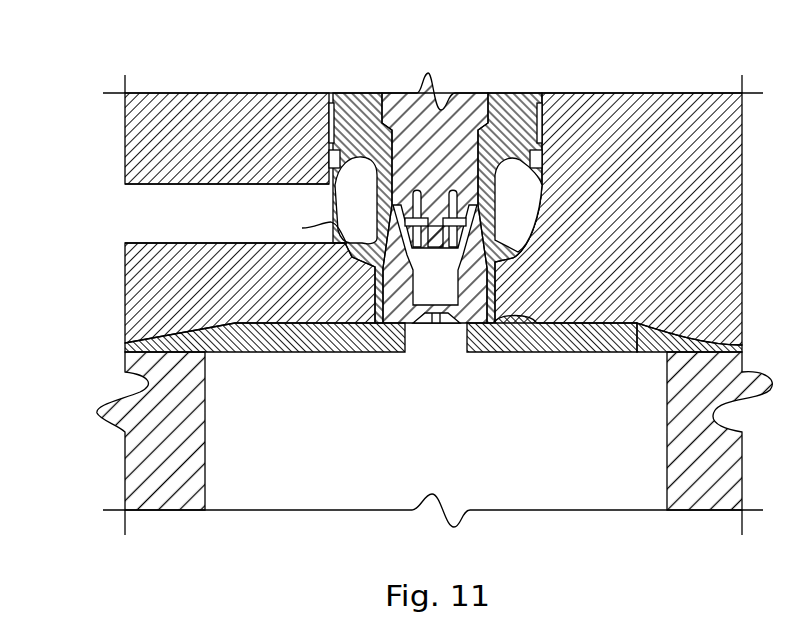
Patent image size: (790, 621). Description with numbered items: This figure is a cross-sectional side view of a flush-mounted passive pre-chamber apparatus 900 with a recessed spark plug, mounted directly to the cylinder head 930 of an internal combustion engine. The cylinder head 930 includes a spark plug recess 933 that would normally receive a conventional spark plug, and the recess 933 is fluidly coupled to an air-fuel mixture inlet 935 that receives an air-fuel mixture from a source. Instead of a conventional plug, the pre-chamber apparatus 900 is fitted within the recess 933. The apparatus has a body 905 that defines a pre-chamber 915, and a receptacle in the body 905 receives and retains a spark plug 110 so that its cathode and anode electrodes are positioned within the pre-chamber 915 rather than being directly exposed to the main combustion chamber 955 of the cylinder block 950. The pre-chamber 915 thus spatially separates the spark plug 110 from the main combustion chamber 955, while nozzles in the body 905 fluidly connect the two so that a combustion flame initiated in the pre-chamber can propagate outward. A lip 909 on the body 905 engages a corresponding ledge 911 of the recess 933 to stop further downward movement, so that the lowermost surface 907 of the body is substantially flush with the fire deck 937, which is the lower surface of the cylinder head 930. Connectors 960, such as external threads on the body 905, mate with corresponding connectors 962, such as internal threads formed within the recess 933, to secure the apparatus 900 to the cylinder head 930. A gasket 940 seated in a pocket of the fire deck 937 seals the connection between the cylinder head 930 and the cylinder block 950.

The spark plug 110 is at (470, 241).
The passive pre-chamber apparatus 900 is at (486, 216).
The body 905 is at (518, 165).
The lowermost surface 907 is at (322, 219).
The lip 909 is at (357, 240).
The ledge 911 is at (299, 230).
The pre-chamber 915 is at (430, 258).
The cylinder head 930 is at (645, 95).
The spark plug recess 933 is at (500, 170).
The air-fuel mixture inlet 935 is at (125, 184).
The fire deck 937 is at (647, 352).
The gasket 940 is at (282, 352).
The cylinder block 950 is at (685, 482).
The main combustion chamber 955 is at (453, 472).
The connectors 960 is at (478, 352).
The corresponding connectors 962 is at (543, 352).